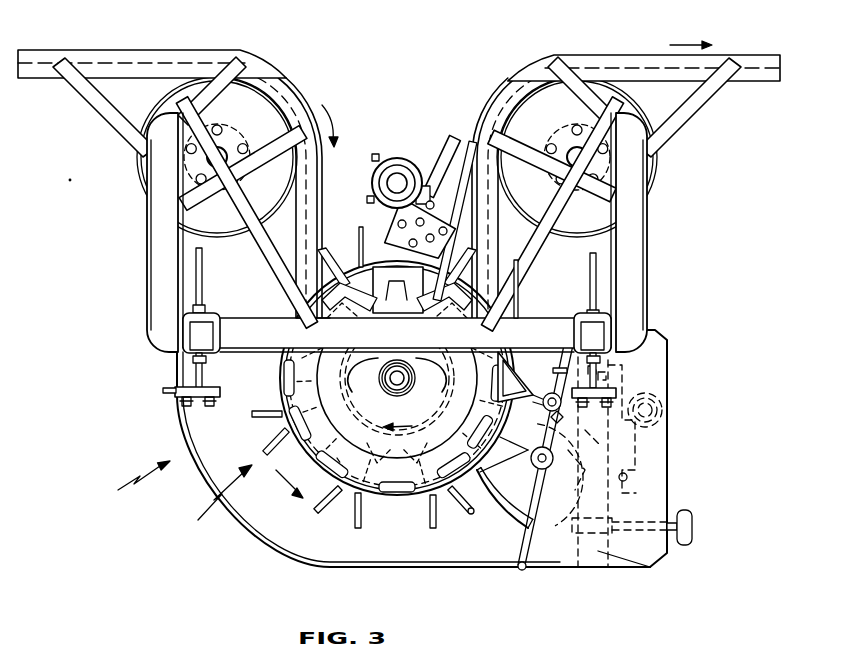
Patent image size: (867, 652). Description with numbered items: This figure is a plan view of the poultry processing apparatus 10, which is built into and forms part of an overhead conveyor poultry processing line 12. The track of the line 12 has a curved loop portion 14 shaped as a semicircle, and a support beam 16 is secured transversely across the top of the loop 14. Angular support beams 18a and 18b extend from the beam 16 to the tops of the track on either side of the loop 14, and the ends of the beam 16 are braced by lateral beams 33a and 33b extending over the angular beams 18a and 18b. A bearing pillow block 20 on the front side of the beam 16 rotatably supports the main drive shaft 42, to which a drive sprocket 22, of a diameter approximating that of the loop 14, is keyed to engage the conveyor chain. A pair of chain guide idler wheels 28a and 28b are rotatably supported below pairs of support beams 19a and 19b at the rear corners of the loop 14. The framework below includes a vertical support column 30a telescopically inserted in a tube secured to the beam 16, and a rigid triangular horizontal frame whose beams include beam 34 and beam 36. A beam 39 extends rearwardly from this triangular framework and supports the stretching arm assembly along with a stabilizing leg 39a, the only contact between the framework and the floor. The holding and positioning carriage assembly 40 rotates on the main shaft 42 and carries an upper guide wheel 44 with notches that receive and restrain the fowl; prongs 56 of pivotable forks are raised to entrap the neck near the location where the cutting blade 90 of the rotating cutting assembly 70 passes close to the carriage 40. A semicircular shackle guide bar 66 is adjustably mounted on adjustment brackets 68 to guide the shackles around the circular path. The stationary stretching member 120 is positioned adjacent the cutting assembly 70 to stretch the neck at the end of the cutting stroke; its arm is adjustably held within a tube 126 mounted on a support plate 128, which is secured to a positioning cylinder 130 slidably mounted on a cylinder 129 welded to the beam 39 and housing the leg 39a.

The poultry processing apparatus 10 is at (132, 484).
The overhead conveyor poultry processing line 12 is at (399, 94).
The curved loop portion 14 is at (395, 475).
The support beam 16 is at (233, 328).
The angular support beam 18a is at (93, 105).
The angular support beam 18b is at (692, 113).
The support beams 19a is at (267, 167).
The support beams 19b is at (493, 130).
The bearing pillow block 20 is at (385, 379).
The drive sprocket 22 is at (402, 311).
The chain guide idler wheel 28a is at (283, 97).
The chain guide idler wheel 28b is at (525, 118).
The support column 30a is at (200, 337).
The lateral beam 33a is at (163, 297).
The lateral beam 33b is at (638, 237).
The beam 34 is at (472, 505).
The beam 36 is at (650, 567).
The beam 39 is at (404, 250).
The stabilizing leg 39a is at (398, 186).
The holding and positioning carriage assembly 40 is at (413, 459).
The main drive shaft 42 is at (402, 386).
The upper guide wheel 44 is at (326, 327).
The prongs 56 is at (268, 416).
The shackle guide bar 66 is at (312, 464).
The adjustment brackets 68 is at (182, 400).
The rotating cutting blade assembly 70 is at (509, 528).
The cutting blade 90 is at (530, 491).
The stretching member 120 is at (530, 370).
The tube 126 is at (448, 138).
The support plate 128 is at (425, 176).
The cylinder 129 is at (390, 183).
The positioning cylinder 130 is at (374, 170).